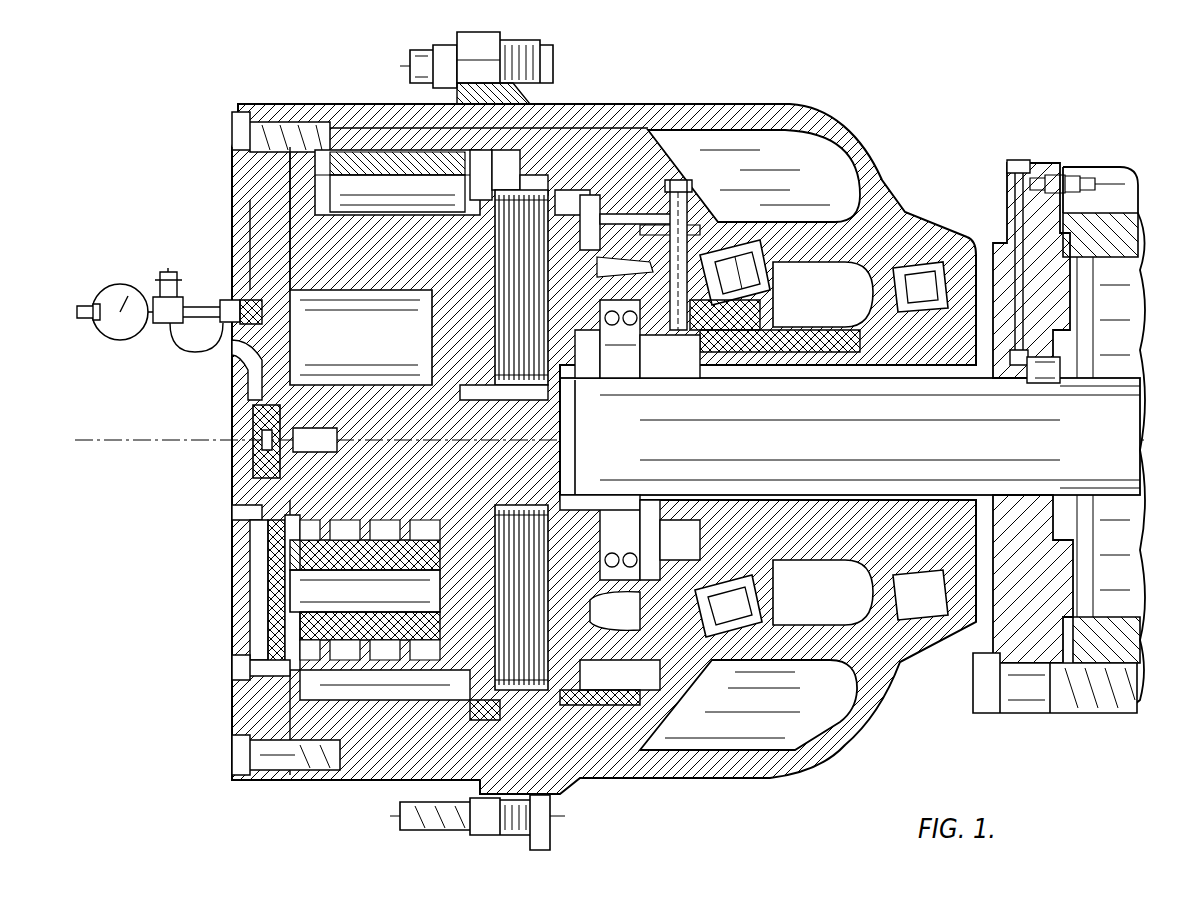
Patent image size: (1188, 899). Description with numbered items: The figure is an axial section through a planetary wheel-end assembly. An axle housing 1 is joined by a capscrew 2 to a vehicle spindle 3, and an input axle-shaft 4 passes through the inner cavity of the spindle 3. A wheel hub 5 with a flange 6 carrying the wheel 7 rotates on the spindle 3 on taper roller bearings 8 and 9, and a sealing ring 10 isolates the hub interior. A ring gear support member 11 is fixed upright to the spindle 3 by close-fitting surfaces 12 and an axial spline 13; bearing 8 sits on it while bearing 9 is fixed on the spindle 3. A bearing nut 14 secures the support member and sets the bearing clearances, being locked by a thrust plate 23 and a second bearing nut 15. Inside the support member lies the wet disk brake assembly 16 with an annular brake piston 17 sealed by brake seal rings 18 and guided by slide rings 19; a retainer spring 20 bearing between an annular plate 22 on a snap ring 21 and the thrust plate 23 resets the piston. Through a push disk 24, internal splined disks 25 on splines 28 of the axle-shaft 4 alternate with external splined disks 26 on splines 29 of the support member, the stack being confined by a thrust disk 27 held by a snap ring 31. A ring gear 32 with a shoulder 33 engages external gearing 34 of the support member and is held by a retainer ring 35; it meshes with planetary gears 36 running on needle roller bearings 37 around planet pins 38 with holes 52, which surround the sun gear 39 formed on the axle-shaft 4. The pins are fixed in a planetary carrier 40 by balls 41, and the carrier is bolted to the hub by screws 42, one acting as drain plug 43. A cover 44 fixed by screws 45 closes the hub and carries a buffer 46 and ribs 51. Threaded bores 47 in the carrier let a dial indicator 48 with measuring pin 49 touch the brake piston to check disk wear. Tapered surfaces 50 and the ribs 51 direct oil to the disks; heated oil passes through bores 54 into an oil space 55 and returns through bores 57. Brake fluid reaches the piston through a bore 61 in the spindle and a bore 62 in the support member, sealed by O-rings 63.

The axle housing 1 is at (1135, 648).
The capscrew 2 is at (1138, 670).
The vehicle spindle 3 is at (1010, 569).
The input axle-shaft 4 is at (850, 479).
The wheel hub 5 is at (868, 722).
The flange 6 is at (520, 44).
The wheel 7 is at (450, 46).
The roller bearing 8 is at (772, 290).
The roller bearing 9 is at (892, 286).
The sealing ring 10 is at (968, 270).
The ring gear support member 11 is at (818, 318).
The fitting surfaces 12 is at (720, 332).
The spline 13 is at (820, 342).
The bearing nut 14 is at (648, 378).
The second bearing nut 15 is at (612, 378).
The wet disk brake assembly 16 is at (608, 214).
The brake piston 17 is at (662, 210).
The brake seal rings 18 is at (612, 690).
The slide rings 19 is at (600, 705).
The retainer spring 20 is at (622, 555).
The snap ring 21 is at (690, 560).
The annular plate 22 is at (640, 556).
The thrust plate 23 is at (625, 378).
The push disk 24 is at (568, 188).
The internal splined disks 25 is at (508, 340).
The external splined disks 26 is at (512, 186).
The thrust disk 27 is at (505, 182).
The splines 28 is at (510, 392).
The splines 29 is at (548, 700).
The snap ring 31 is at (480, 175).
The ring gear 32 is at (370, 162).
The shoulder 33 is at (436, 165).
The external gearing 34 is at (470, 715).
The retainer ring 35 is at (500, 718).
The planetary gears 36 is at (248, 530).
The needle roller bearings 37 is at (245, 594).
The planet pins 38 is at (312, 575).
The sun gear 39 is at (352, 375).
The planetary carrier 40 is at (240, 182).
The balls 41 is at (245, 562).
The screws 42 is at (234, 132).
The drain plug 43 is at (246, 776).
The cover 44 is at (242, 226).
The screws 45 is at (232, 667).
The buffer 46 is at (252, 406).
The bores 47 is at (240, 298).
The dial indicator 48 is at (125, 292).
The measuring pin 49 is at (240, 362).
The tapered surfaces 50 is at (588, 400).
The ribs 51 is at (240, 514).
The holes 52 is at (375, 612).
The bores 54 is at (598, 200).
The oil space 55 is at (740, 160).
The bores 57 is at (656, 618).
The bore 61 is at (1012, 335).
The bore 62 is at (700, 228).
The O-rings 63 is at (708, 560).